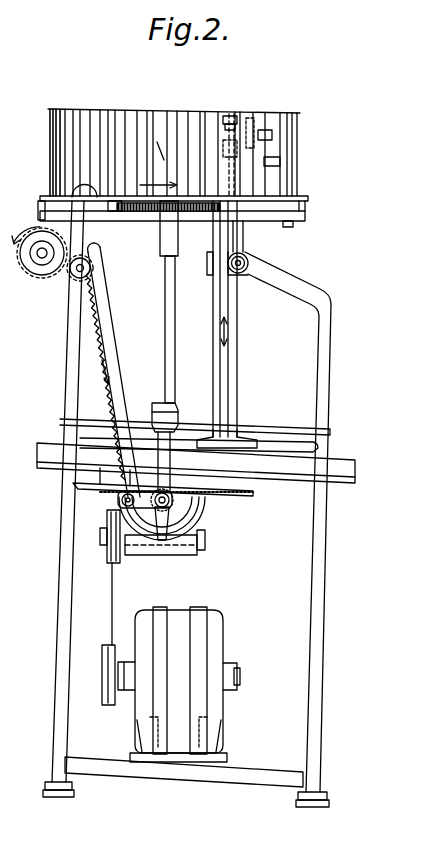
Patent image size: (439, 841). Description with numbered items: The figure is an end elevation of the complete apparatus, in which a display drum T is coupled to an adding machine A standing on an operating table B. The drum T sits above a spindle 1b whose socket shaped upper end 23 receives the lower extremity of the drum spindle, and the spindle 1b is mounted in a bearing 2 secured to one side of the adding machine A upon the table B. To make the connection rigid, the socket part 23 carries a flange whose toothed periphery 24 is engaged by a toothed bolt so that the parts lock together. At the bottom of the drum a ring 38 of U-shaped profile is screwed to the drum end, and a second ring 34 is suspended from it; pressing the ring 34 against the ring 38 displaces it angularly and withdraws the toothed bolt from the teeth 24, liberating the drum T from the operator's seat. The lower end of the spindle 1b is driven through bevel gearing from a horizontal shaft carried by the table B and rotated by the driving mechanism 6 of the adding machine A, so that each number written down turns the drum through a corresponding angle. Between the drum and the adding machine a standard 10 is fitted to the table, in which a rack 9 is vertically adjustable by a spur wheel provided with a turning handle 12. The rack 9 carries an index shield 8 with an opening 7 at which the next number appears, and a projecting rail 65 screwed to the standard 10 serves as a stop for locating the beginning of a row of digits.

The display drum T is at (150, 144).
The rack 9 is at (232, 160).
The index shield 8 is at (267, 143).
The opening 7 is at (272, 168).
The ring 38 is at (179, 198).
The ring 34 is at (292, 224).
The socket shaped upper end 23 is at (120, 207).
The toothed periphery 24 is at (116, 211).
The spindle 1b is at (163, 347).
The bearing 2 is at (185, 408).
The standard 10 is at (232, 352).
The projecting rail 65 is at (209, 266).
The turning handle 12 is at (247, 258).
The adding machine A is at (293, 388).
The operating table B is at (352, 463).
The driving mechanism 6 is at (205, 527).